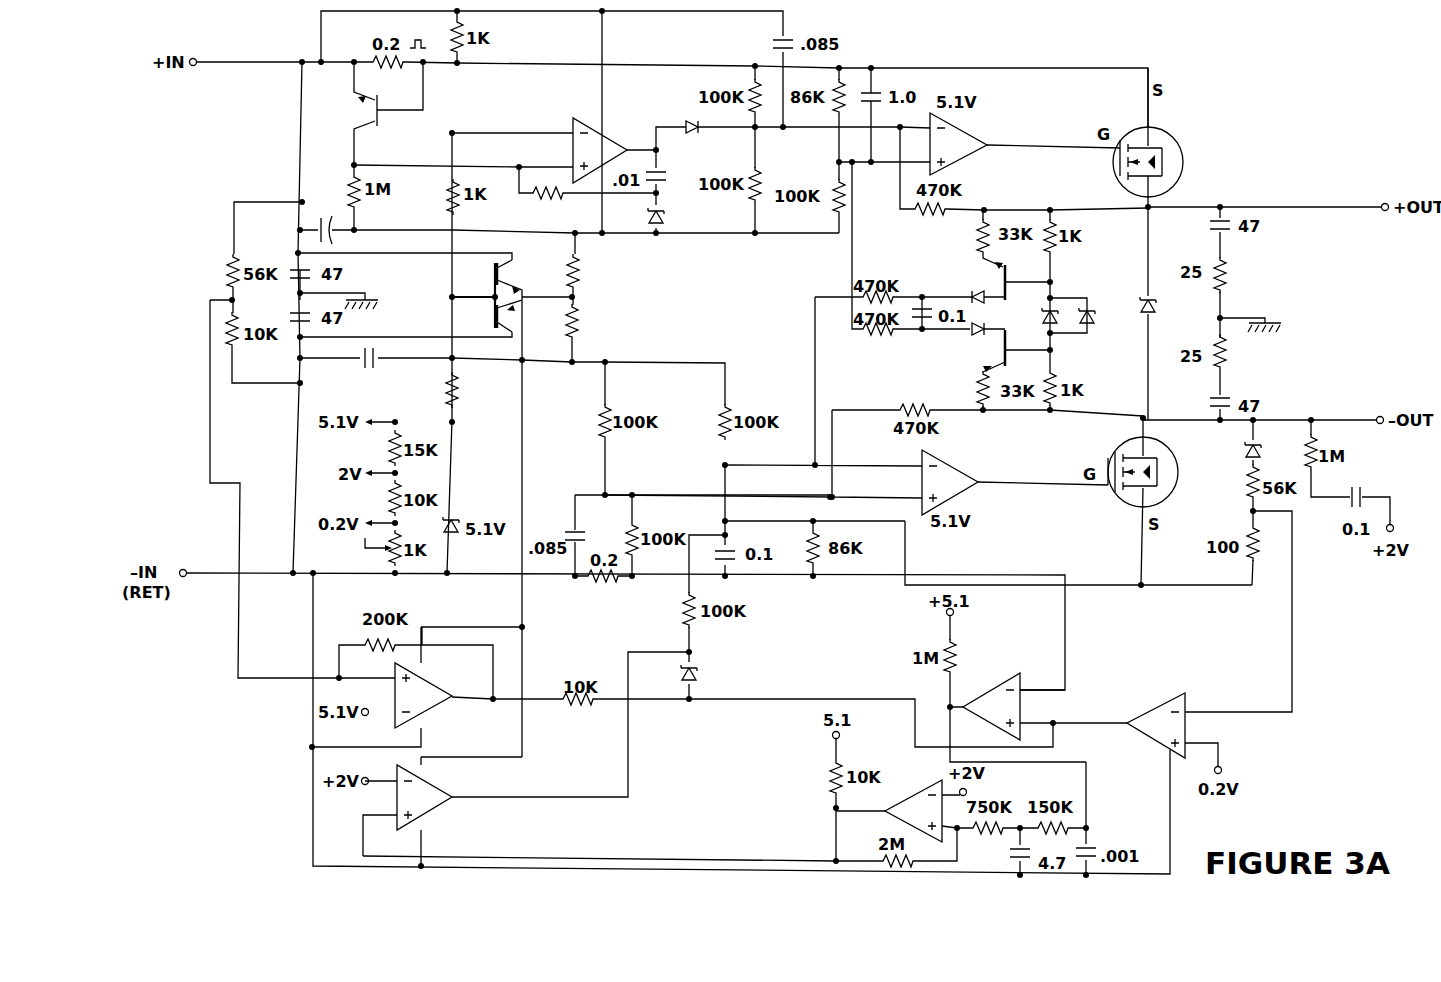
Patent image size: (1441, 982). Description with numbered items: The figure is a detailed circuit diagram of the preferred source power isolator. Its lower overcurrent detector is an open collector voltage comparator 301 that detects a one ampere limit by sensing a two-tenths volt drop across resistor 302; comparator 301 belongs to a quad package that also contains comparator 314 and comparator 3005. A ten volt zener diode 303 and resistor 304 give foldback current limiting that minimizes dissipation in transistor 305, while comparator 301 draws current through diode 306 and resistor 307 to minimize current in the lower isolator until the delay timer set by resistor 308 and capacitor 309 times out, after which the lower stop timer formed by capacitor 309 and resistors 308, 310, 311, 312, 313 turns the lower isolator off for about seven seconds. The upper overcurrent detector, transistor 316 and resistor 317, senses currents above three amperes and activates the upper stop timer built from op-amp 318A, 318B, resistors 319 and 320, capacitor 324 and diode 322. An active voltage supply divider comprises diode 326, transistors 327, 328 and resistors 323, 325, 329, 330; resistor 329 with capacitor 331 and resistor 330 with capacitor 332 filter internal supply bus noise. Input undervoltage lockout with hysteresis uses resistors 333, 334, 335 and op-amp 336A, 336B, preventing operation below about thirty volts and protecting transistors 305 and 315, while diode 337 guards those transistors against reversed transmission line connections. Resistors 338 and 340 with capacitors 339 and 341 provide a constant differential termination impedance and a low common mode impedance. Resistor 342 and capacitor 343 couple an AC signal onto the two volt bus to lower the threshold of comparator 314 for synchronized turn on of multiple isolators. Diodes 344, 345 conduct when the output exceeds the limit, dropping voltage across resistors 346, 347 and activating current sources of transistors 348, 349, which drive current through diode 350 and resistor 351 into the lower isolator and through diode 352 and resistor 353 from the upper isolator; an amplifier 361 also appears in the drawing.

The voltage comparator 301 is at (1153, 705).
The resistor 302 is at (580, 585).
The 10V zener diode 303 is at (1245, 450).
The resistor 304 is at (1244, 482).
The transistor 305 is at (1108, 458).
The diode 306 is at (700, 668).
The resistor 307 is at (678, 612).
The resistor 308 is at (1078, 822).
The capacitor 309 is at (1012, 849).
The resistor 310 is at (828, 764).
The resistor 311 is at (878, 852).
The resistor 312 is at (1012, 822).
The resistor 313 is at (958, 640).
The comparator 314 is at (910, 793).
The transistor 315 is at (1176, 142).
The transistor 316 is at (372, 123).
The resistor 317 is at (372, 58).
The op-amp 318A is at (596, 133).
The op-amp 318B is at (975, 126).
The resistor 319 is at (360, 205).
The resistor 320 is at (540, 197).
The diode 322 is at (665, 219).
The resistor 323 is at (462, 52).
The capacitor 324 is at (448, 195).
The resistor 325 is at (460, 400).
The diode 326 is at (456, 516).
The transistor 327 is at (505, 268).
The transistor 328 is at (508, 330).
The resistor 329 is at (580, 270).
The resistor 330 is at (580, 320).
The capacitor 331 is at (328, 214).
The capacitor 332 is at (375, 370).
The resistor 333 is at (228, 262).
The resistor 334 is at (228, 322).
The resistor 335 is at (368, 641).
The op-amp 336A is at (426, 683).
The op-amp 336B is at (972, 478).
The diode 337 is at (1140, 305).
The resistor 338 is at (1228, 281).
The capacitor 339 is at (566, 526).
The resistor 340 is at (1228, 356).
The capacitor 341 is at (1210, 400).
The resistor 342 is at (1308, 454).
The capacitor 343 is at (1364, 490).
The diode 344 is at (1042, 322).
The diode 345 is at (1094, 324).
The resistor 346 is at (1062, 246).
The resistor 347 is at (1062, 398).
The transistor 348 is at (992, 262).
The transistor 349 is at (978, 382).
The diode 350 is at (975, 291).
The resistor 351 is at (846, 295).
The diode 352 is at (972, 338).
The resistor 353 is at (848, 333).
The operational amplifier 361 is at (1008, 682).
The comparator 3005 is at (437, 788).